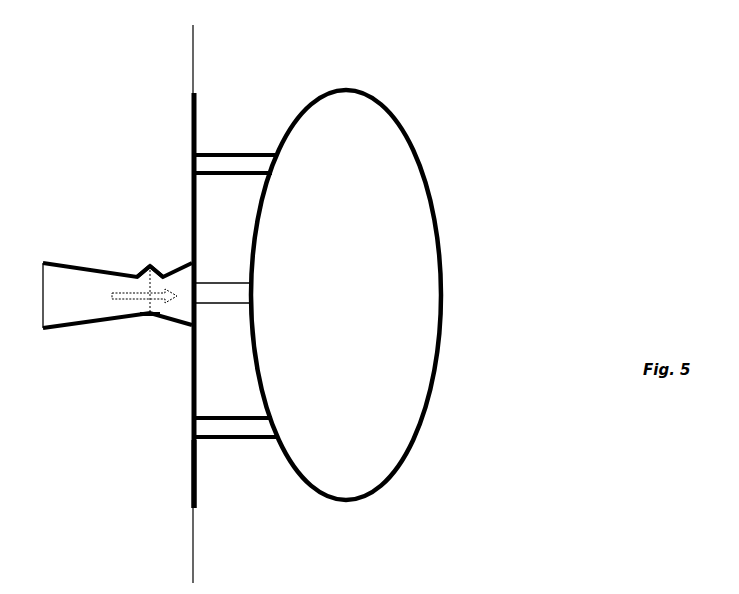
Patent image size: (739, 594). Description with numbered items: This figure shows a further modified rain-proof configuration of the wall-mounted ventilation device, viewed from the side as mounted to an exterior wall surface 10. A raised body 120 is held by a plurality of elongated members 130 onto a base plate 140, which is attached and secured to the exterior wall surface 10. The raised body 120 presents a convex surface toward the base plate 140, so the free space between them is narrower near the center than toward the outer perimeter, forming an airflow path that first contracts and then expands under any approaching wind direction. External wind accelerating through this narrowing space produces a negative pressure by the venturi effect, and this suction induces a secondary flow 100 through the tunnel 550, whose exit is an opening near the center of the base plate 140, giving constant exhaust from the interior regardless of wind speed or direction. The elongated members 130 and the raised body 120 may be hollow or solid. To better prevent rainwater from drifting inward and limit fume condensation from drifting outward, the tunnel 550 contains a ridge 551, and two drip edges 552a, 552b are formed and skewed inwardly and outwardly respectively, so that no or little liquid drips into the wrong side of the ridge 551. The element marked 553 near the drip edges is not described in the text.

The exterior wall surface 10 is at (197, 55).
The secondary flow 100 is at (137, 304).
The raised body 120 is at (346, 295).
The elongated members 130 is at (243, 150).
The base plate 140 is at (198, 470).
The tunnel 550 is at (117, 295).
The ridge 551 is at (150, 319).
The drip edge 552a is at (161, 272).
The drip edge 552b is at (136, 275).
The notch apex 553 is at (148, 263).